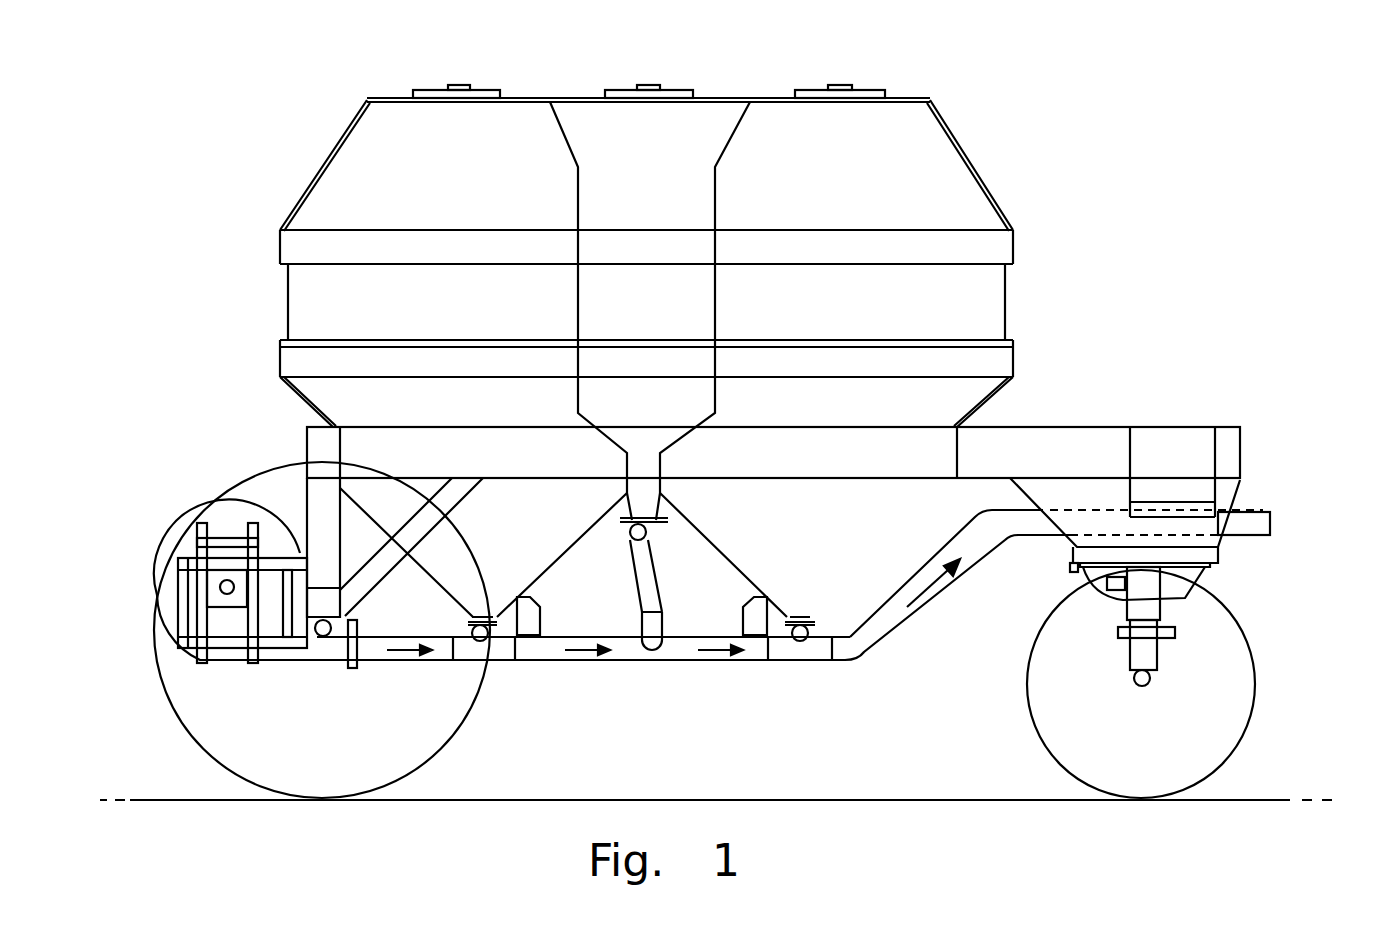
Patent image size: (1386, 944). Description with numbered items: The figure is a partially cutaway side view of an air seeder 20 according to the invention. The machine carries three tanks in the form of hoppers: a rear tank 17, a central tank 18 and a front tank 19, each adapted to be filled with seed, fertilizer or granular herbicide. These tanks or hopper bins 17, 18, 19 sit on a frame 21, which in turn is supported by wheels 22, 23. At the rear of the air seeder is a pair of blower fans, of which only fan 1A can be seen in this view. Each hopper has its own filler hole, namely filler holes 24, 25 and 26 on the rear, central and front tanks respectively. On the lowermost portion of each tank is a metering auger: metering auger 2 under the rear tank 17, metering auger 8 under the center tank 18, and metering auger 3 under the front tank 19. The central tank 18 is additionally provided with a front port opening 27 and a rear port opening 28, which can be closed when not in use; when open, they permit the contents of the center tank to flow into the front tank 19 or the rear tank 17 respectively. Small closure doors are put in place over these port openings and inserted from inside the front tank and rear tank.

The fan 1A is at (225, 665).
The metering auger 2 is at (500, 665).
The metering auger 3 is at (800, 665).
The metering auger 8 is at (650, 540).
The rear tank 17 is at (467, 153).
The central tank 18 is at (658, 162).
The front tank 19 is at (855, 157).
The air seeder 20 is at (1085, 237).
The frame 21 is at (1060, 427).
The wheel 22 is at (1245, 640).
The wheel 23 is at (180, 733).
The filler hole 24 is at (431, 90).
The filler hole 25 is at (610, 90).
The filler hole 26 is at (805, 90).
The front port opening 27 is at (668, 468).
The rear port opening 28 is at (625, 470).